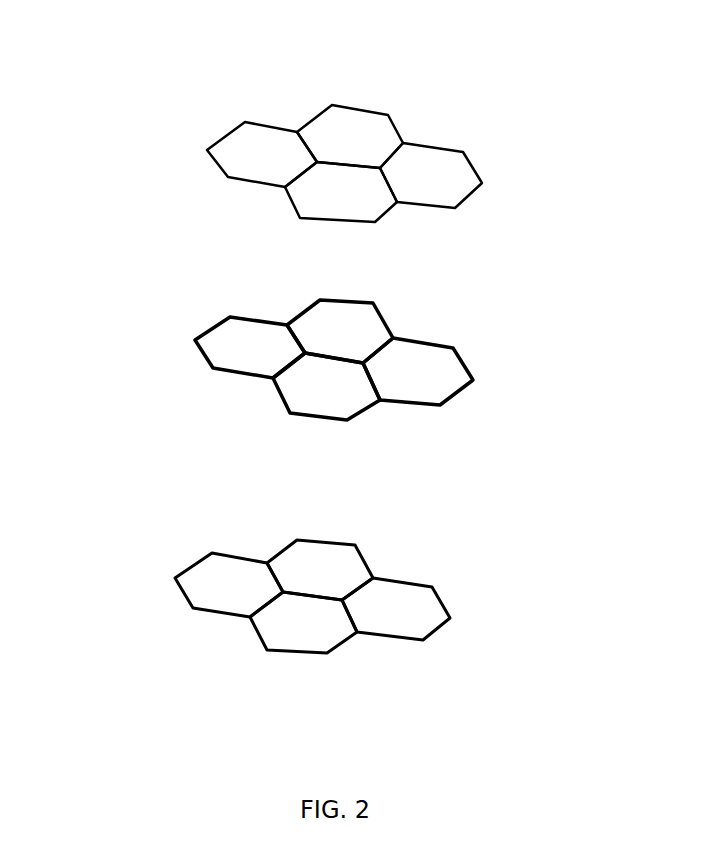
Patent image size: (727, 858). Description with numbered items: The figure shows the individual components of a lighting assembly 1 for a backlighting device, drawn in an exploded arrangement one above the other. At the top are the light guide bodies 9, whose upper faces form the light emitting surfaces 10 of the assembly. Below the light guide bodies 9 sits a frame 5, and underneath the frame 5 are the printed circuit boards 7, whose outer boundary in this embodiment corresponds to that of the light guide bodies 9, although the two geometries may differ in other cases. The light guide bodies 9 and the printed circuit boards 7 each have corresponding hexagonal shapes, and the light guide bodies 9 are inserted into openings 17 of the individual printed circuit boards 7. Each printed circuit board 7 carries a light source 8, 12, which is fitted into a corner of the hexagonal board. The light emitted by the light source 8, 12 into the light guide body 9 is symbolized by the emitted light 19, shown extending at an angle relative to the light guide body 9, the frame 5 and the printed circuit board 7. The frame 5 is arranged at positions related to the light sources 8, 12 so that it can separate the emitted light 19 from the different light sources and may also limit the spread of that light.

The lighting assembly 1 is at (590, 22).
The frame 5 is at (475, 380).
The printed circuit board 7 is at (297, 579).
The light source 8 is at (297, 545).
The light guide body 9 is at (336, 136).
The light emitting surface 10 is at (327, 142).
The light source 12 is at (297, 545).
The opening 17 is at (297, 577).
The emitted light 19 is at (138, 527).